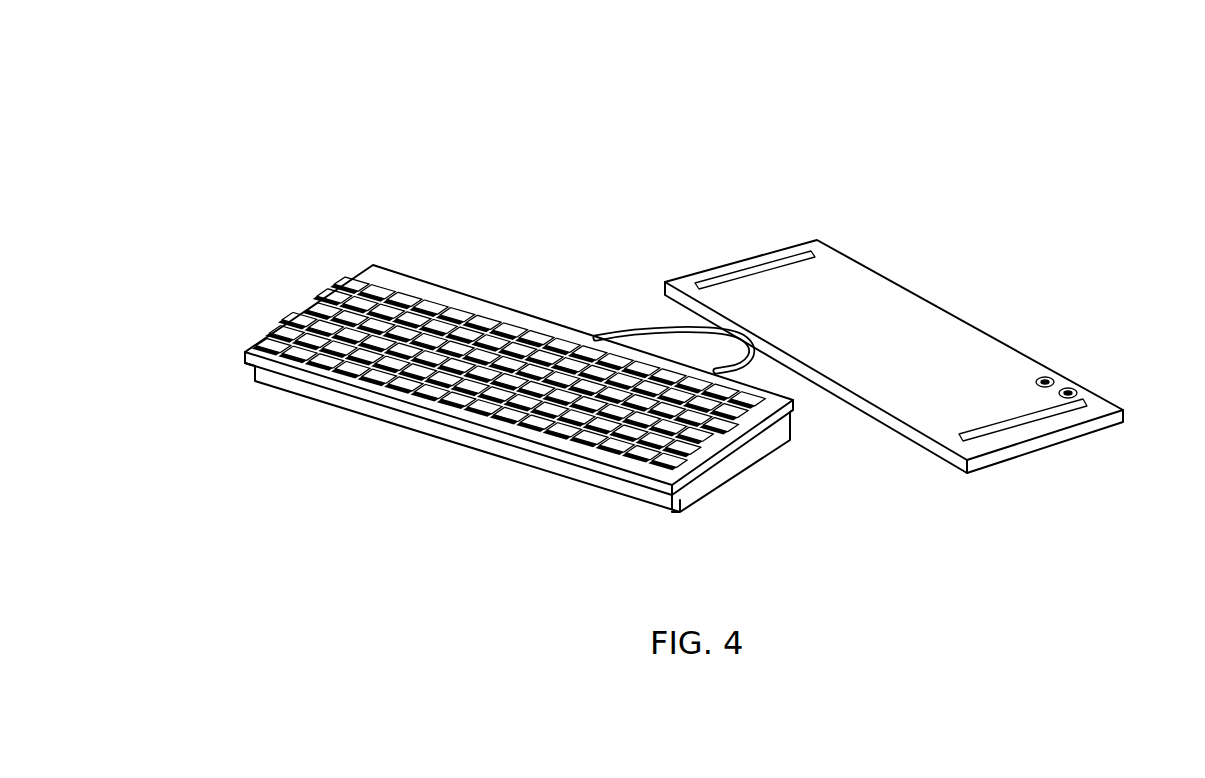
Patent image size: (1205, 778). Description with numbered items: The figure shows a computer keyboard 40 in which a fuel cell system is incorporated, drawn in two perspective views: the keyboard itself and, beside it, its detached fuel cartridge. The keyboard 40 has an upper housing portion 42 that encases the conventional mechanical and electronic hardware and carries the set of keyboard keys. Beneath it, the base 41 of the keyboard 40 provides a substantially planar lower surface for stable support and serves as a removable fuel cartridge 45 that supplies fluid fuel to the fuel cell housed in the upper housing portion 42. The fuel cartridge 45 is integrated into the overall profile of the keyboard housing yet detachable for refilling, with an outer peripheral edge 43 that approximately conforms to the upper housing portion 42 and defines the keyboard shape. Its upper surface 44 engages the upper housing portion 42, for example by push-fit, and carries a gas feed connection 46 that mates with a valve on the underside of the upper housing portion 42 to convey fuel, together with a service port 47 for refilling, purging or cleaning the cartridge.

The keyboard 40 is at (268, 90).
The upper housing portion 42 is at (372, 264).
The fuel cartridge 45 is at (920, 260).
The upper surface 44 is at (962, 398).
The outer peripheral edge 43 is at (930, 461).
The base 41 is at (1126, 420).
The gas feed connection 46 is at (1076, 390).
The service port 47 is at (1043, 376).